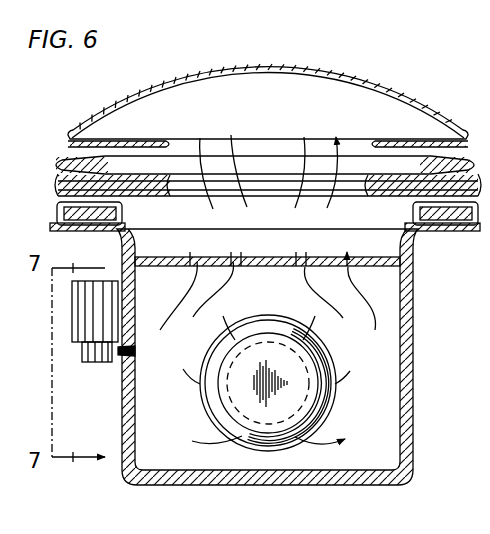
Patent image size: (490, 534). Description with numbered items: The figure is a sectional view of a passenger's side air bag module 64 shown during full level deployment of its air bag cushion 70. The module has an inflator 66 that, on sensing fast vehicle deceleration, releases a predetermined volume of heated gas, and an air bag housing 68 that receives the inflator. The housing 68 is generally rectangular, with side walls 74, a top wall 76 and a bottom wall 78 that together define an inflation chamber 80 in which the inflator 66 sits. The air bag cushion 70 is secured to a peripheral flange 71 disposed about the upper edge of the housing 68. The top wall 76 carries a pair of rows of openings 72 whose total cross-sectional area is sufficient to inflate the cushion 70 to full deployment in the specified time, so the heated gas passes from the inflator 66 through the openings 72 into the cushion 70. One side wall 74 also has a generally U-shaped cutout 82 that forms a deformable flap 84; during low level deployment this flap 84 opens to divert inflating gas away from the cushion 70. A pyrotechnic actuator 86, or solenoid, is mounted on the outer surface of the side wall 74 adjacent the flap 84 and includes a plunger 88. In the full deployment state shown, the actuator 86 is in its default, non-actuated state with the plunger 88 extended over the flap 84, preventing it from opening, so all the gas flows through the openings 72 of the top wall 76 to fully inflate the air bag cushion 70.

The air bag module 64 is at (337, 52).
The inflator 66 is at (322, 409).
The air bag housing 68 is at (414, 343).
The air bag cushion 70 is at (398, 88).
The peripheral flange 71 is at (60, 238).
The openings 72 is at (298, 256).
The side walls 74 is at (413, 375).
The top wall 76 is at (385, 252).
The bottom wall 78 is at (342, 486).
The inflation chamber 80 is at (387, 292).
The U-shaped cutout 82 is at (125, 355).
The deformable flap 84 is at (121, 408).
The pyrotechnic actuator 86 is at (73, 312).
The plunger 88 is at (86, 361).